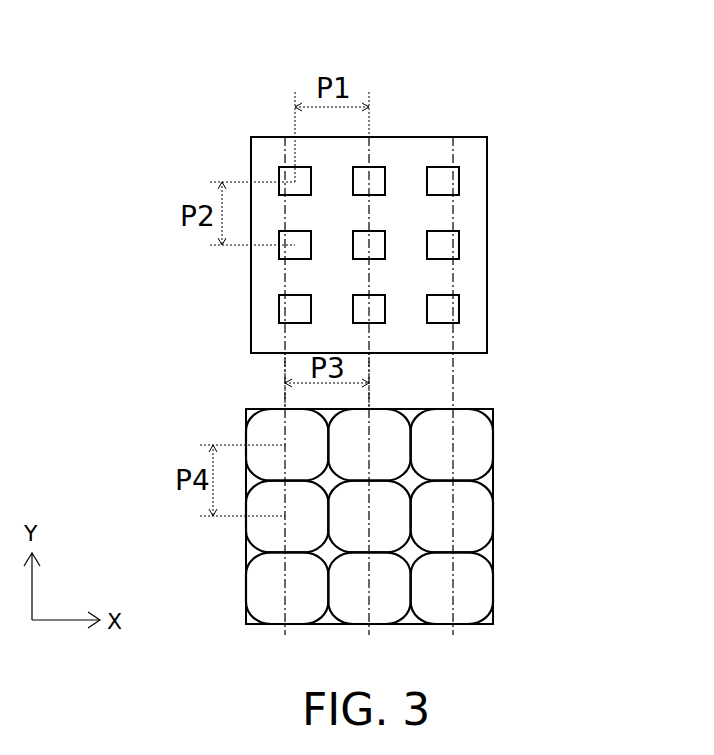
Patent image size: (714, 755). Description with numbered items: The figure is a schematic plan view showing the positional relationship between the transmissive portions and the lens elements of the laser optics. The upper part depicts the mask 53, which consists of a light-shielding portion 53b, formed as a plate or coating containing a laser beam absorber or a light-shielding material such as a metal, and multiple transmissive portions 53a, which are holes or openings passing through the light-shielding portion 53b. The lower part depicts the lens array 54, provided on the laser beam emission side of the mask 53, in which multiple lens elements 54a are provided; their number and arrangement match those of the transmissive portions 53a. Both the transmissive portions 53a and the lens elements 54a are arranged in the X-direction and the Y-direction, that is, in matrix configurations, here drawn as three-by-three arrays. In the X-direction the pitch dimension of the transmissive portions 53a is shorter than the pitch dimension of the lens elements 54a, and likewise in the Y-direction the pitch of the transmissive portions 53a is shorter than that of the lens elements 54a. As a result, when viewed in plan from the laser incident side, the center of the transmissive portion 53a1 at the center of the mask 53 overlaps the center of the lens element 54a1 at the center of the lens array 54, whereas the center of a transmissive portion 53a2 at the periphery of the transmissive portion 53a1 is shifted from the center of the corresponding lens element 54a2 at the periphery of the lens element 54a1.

The mask 53 is at (540, 64).
The transmissive portions 53a is at (443, 165).
The light-shielding portion 53b is at (473, 182).
The transmissive portion at the center of the mask 53a1 is at (373, 243).
The transmissive portion at the periphery 53a2 is at (443, 245).
The lens array 54 is at (210, 418).
The lens elements 54a is at (493, 440).
The lens element at the center of the lens array 54a1 is at (383, 518).
The lens element at the periphery 54a2 is at (477, 512).